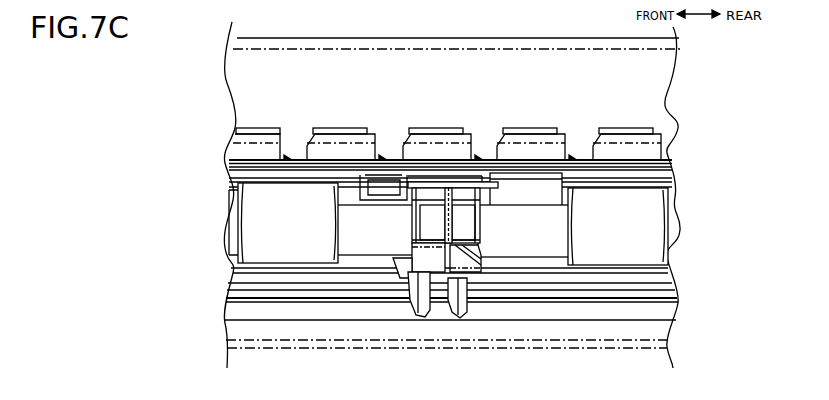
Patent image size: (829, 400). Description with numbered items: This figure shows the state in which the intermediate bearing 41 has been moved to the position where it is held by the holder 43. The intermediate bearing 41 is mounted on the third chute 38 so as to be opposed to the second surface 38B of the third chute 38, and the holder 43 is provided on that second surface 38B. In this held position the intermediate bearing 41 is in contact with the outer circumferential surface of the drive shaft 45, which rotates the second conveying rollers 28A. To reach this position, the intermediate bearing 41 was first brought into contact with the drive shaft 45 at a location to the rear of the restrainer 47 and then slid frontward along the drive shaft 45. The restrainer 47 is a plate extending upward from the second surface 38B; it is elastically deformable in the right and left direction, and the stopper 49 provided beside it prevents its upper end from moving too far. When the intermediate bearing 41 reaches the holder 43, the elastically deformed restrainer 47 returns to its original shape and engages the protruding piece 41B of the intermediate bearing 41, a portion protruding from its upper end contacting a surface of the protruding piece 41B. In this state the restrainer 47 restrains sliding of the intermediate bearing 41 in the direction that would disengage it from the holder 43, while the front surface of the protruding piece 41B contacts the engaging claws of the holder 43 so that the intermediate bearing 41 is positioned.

The second conveying rollers 28A is at (282, 208).
The drive shaft 45 is at (353, 228).
The intermediate bearing 41 is at (467, 192).
The protruding piece 41B is at (450, 192).
The third chute 38 is at (543, 185).
The second surface 38B is at (235, 273).
The holder 43 is at (427, 267).
The stopper 49 is at (460, 290).
The restrainer 47 is at (470, 265).